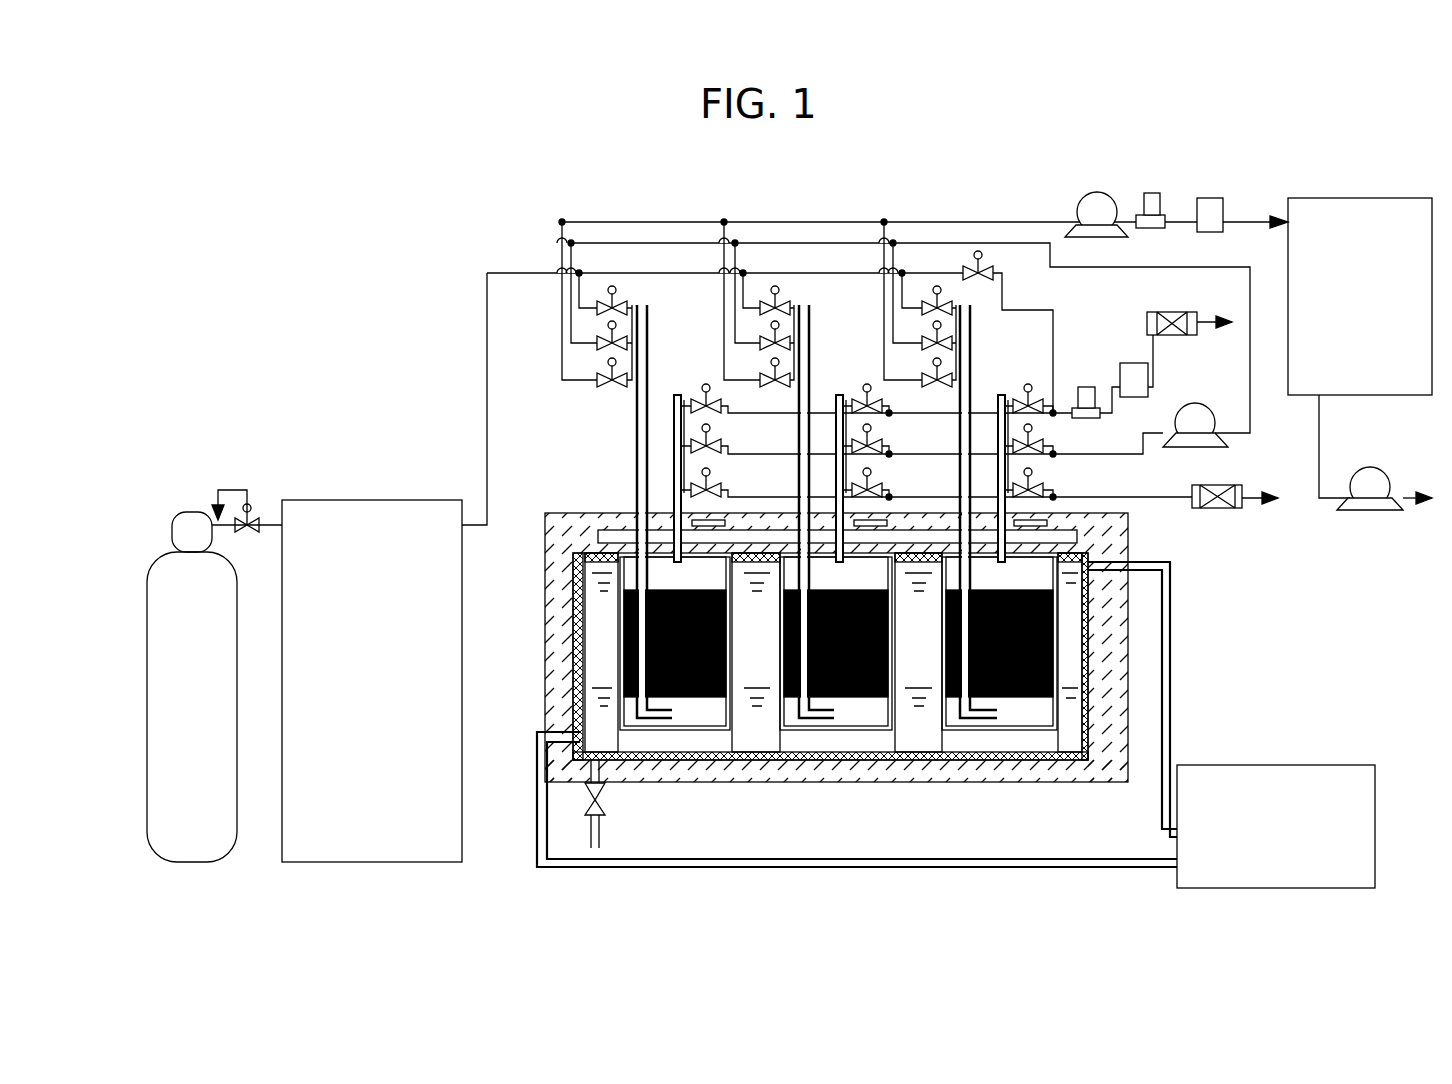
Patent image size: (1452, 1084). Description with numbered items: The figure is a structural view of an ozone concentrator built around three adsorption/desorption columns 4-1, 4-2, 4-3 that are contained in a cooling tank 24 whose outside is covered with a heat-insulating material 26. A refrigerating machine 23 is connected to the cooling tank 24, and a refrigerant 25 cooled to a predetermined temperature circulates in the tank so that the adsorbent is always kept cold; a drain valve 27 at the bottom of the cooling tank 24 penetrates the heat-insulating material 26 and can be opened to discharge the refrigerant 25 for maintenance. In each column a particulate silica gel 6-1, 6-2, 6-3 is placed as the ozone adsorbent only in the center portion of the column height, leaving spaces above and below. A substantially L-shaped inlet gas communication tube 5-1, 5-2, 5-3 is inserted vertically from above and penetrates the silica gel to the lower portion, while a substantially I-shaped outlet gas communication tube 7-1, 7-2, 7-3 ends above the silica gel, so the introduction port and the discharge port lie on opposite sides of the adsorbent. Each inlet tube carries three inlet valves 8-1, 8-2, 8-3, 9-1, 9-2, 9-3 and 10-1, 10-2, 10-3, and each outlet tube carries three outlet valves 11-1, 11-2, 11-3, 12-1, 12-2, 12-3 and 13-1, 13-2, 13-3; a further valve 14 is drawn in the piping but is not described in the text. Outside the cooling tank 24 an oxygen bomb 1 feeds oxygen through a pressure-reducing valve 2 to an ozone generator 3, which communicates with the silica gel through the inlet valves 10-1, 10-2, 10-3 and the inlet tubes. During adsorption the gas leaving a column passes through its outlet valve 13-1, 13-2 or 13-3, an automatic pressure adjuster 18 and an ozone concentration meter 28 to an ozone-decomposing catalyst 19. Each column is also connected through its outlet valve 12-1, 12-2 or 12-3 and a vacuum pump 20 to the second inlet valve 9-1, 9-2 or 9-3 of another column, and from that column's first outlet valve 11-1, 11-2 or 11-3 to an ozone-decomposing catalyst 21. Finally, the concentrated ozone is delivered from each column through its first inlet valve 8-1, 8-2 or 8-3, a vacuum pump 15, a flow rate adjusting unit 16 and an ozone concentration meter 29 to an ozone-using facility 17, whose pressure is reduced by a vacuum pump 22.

The oxygen bomb 1 is at (182, 572).
The pressure-reducing valve 2 is at (252, 530).
The ozone generator 3 is at (322, 515).
The adsorption/desorption column 4-1 is at (617, 723).
The adsorption/desorption column 4-2 is at (778, 730).
The adsorption/desorption column 4-3 is at (1040, 733).
The inlet gas communication tube 5-1 is at (652, 716).
The inlet gas communication tube 5-2 is at (820, 717).
The inlet gas communication tube 5-3 is at (990, 717).
The silica gel 6-1 is at (693, 697).
The silica gel 6-2 is at (858, 697).
The silica gel 6-3 is at (1007, 697).
The outlet gas communication tube 7-1 is at (678, 393).
The outlet gas communication tube 7-2 is at (840, 393).
The outlet gas communication tube 7-3 is at (1002, 393).
The inlet valve 8-1 is at (607, 385).
The inlet valve 8-2 is at (779, 390).
The inlet valve 8-3 is at (930, 380).
The inlet valve 9-1 is at (607, 347).
The inlet valve 9-2 is at (769, 348).
The inlet valve 9-3 is at (933, 345).
The inlet valve 10-1 is at (620, 300).
The inlet valve 10-2 is at (783, 300).
The inlet valve 10-3 is at (928, 298).
The outlet valve 11-1 is at (720, 489).
The outlet valve 11-2 is at (881, 489).
The outlet valve 11-3 is at (1042, 489).
The outlet valve 12-1 is at (720, 445).
The outlet valve 12-2 is at (881, 445).
The outlet valve 12-3 is at (1042, 445).
The outlet valve 13-1 is at (712, 386).
The outlet valve 13-2 is at (873, 386).
The outlet valve 13-3 is at (1036, 386).
The valve 14 is at (985, 280).
The vacuum pump 15 is at (1097, 212).
The flow rate adjusting unit (mass-flow controller) 16 is at (1150, 192).
The ozone-using facility 17 is at (1318, 223).
The automatic pressure adjuster 18 is at (1085, 387).
The ozone-decomposing catalyst 19 is at (1168, 312).
The vacuum pump 20 is at (1200, 405).
The ozone-decomposing catalyst 21 is at (1215, 508).
The vacuum pump 22 is at (1368, 510).
The refrigerating machine 23 is at (1255, 888).
The cooling tank 24 is at (755, 760).
The refrigerant 25 is at (903, 735).
The heat-insulating material 26 is at (948, 770).
The drain valve 27 is at (585, 788).
The ozone concentration meter 28 is at (1123, 363).
The ozone concentration meter 29 is at (1207, 196).